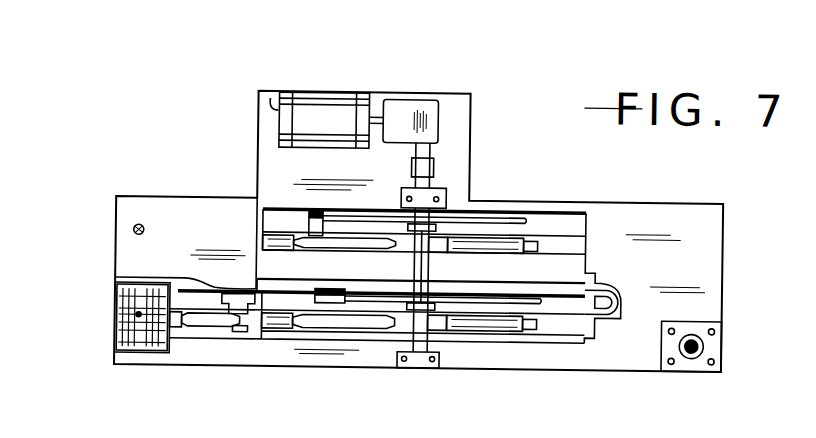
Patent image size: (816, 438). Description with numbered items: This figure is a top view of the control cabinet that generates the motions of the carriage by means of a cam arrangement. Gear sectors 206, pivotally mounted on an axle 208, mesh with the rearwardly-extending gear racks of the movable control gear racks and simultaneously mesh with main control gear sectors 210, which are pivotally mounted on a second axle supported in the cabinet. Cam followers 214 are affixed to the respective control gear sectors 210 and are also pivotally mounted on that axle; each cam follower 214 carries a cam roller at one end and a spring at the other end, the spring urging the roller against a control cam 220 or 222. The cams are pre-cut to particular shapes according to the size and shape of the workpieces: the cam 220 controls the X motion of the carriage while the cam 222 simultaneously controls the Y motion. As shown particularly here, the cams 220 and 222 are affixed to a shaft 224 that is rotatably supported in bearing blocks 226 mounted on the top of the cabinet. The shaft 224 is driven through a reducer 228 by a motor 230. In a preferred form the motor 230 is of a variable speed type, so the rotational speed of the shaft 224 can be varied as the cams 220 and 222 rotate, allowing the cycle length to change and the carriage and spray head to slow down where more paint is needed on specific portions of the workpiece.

The gear sector 206 is at (281, 235).
The axle 208 is at (242, 334).
The main control gear sector 210 is at (480, 247).
The cam follower 214 is at (562, 228).
The control cam 220 is at (550, 296).
The control cam 222 is at (492, 220).
The shaft 224 is at (412, 270).
The bearing block 226 is at (447, 201).
The reducer 228 is at (437, 118).
The motor 230 is at (268, 104).